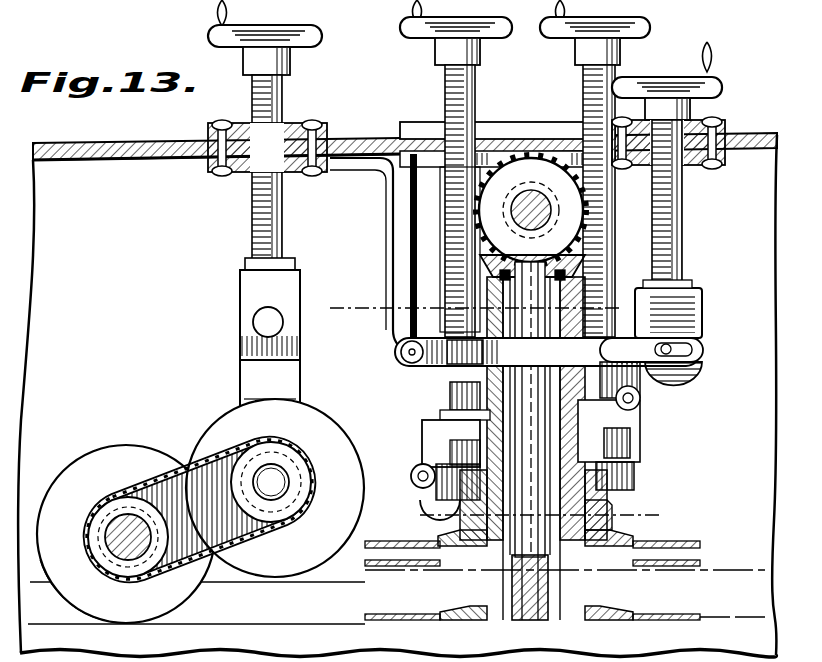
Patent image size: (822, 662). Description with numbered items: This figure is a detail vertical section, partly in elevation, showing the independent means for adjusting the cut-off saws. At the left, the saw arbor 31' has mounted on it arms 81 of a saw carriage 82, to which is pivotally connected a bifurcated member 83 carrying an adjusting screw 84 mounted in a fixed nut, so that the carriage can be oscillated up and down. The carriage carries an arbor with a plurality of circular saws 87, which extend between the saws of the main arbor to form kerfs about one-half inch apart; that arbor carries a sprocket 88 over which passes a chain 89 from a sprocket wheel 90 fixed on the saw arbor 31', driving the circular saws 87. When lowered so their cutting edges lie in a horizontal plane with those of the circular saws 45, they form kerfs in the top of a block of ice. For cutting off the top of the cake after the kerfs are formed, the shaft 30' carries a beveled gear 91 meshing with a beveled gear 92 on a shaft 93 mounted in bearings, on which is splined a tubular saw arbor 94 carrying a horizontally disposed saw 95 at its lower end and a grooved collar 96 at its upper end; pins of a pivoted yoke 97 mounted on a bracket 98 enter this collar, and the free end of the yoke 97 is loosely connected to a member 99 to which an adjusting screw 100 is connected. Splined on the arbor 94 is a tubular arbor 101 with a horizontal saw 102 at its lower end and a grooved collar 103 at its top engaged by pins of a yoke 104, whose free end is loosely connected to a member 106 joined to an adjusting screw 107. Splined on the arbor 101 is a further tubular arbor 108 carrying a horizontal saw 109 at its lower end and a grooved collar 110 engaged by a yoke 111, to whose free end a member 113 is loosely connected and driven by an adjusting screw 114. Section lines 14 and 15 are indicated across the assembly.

The adjusting screw 84 is at (262, 82).
The bifurcated member 83 is at (262, 285).
The saw carriage 82 is at (262, 377).
The adjusting screw 114 is at (446, 86).
The adjusting screw 107 is at (605, 72).
The adjusting screw 100 is at (672, 184).
The beveled gear 92 is at (392, 197).
The bracket 98 is at (405, 232).
The beveled gear 91 is at (455, 269).
The shaft 30' is at (531, 174).
The shaft 93 is at (556, 309).
The tubular saw arbor 94 is at (510, 590).
The saw 95 is at (392, 618).
The saw 109 is at (688, 541).
The saw 102 is at (678, 568).
The tubular arbor 108 is at (606, 508).
The grooved collar 96 is at (470, 333).
The pivoted yoke 97 is at (445, 355).
The member 106 is at (700, 356).
The member 99 is at (690, 320).
The grooved collar 103 is at (648, 376).
The tubular arbor 101 is at (640, 420).
The grooved collar 110 is at (612, 450).
The yoke 111 is at (630, 472).
The yoke 104 is at (450, 400).
The member 113 is at (430, 432).
The section line 14- 14 is at (381, 300).
The section line 15- 15 is at (418, 503).
The circular saws 45 is at (74, 474).
The chain 89 is at (218, 550).
The arms 81 is at (193, 498).
The sprocket wheel 90 is at (127, 563).
The saw arbor 31' is at (117, 486).
The sprocket 88 is at (293, 493).
The circular saws 87 is at (279, 517).